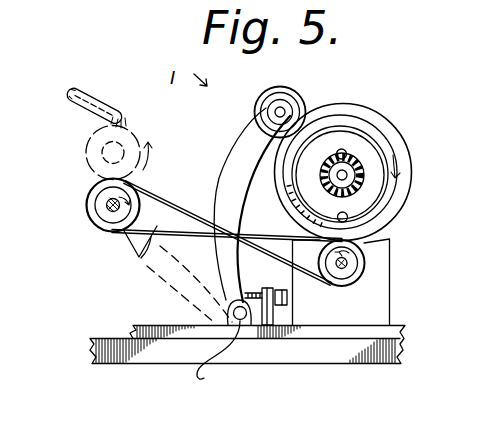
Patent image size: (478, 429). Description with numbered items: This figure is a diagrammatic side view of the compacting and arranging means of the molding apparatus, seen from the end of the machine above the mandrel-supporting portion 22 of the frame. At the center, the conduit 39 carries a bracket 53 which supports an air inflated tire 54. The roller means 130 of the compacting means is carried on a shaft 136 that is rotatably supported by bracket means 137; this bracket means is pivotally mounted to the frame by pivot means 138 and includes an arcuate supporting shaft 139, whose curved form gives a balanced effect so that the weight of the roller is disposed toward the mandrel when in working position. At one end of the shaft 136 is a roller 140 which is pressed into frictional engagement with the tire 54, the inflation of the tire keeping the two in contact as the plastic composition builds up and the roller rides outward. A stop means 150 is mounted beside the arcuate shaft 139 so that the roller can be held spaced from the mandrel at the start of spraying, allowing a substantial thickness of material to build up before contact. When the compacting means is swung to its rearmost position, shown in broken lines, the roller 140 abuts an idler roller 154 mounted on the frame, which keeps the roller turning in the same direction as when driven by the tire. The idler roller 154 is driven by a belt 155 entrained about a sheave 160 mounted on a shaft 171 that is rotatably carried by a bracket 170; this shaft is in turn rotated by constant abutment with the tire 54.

The mandrel-supporting portion 22 is at (92, 349).
The conduit 39 is at (360, 166).
The bracket 53 is at (374, 188).
The air inflated tire 54 is at (373, 132).
The roller means 130 is at (309, 87).
The shaft 136 is at (300, 108).
The bracket means 137 is at (199, 106).
The pivot means 138 is at (218, 357).
The arcuate supporting shaft 139 is at (238, 140).
The roller 140 is at (88, 146).
The stop means 150 is at (276, 312).
The idler roller 154 is at (99, 209).
The belt 155 is at (138, 256).
The sheave 160 is at (360, 278).
The bracket 170 is at (390, 301).
The shaft 171 is at (347, 262).